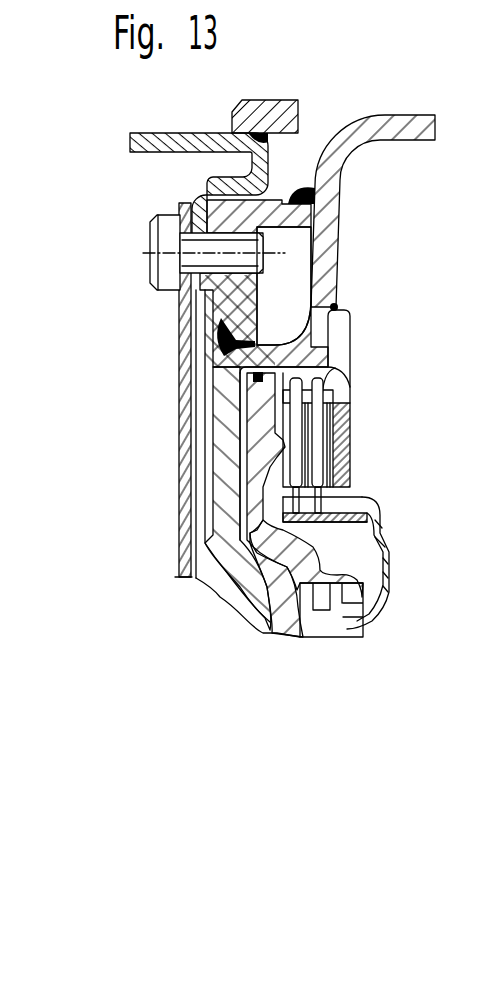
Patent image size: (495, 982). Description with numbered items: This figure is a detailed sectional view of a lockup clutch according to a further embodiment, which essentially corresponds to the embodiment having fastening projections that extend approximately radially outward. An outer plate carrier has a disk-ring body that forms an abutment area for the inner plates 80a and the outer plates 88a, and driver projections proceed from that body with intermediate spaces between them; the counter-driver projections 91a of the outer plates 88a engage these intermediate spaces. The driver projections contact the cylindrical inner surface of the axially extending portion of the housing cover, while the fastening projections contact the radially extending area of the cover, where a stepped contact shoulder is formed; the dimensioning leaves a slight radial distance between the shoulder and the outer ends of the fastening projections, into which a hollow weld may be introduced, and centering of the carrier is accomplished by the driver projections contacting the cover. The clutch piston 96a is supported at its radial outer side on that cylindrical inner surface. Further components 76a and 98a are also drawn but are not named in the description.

The inner plates 80a is at (325, 475).
The cover 76a is at (382, 565).
The tab 98a is at (325, 630).
The clutch piston 96a is at (265, 542).
The counter-driver projections 91a is at (330, 383).
The outer plates 88a is at (275, 430).